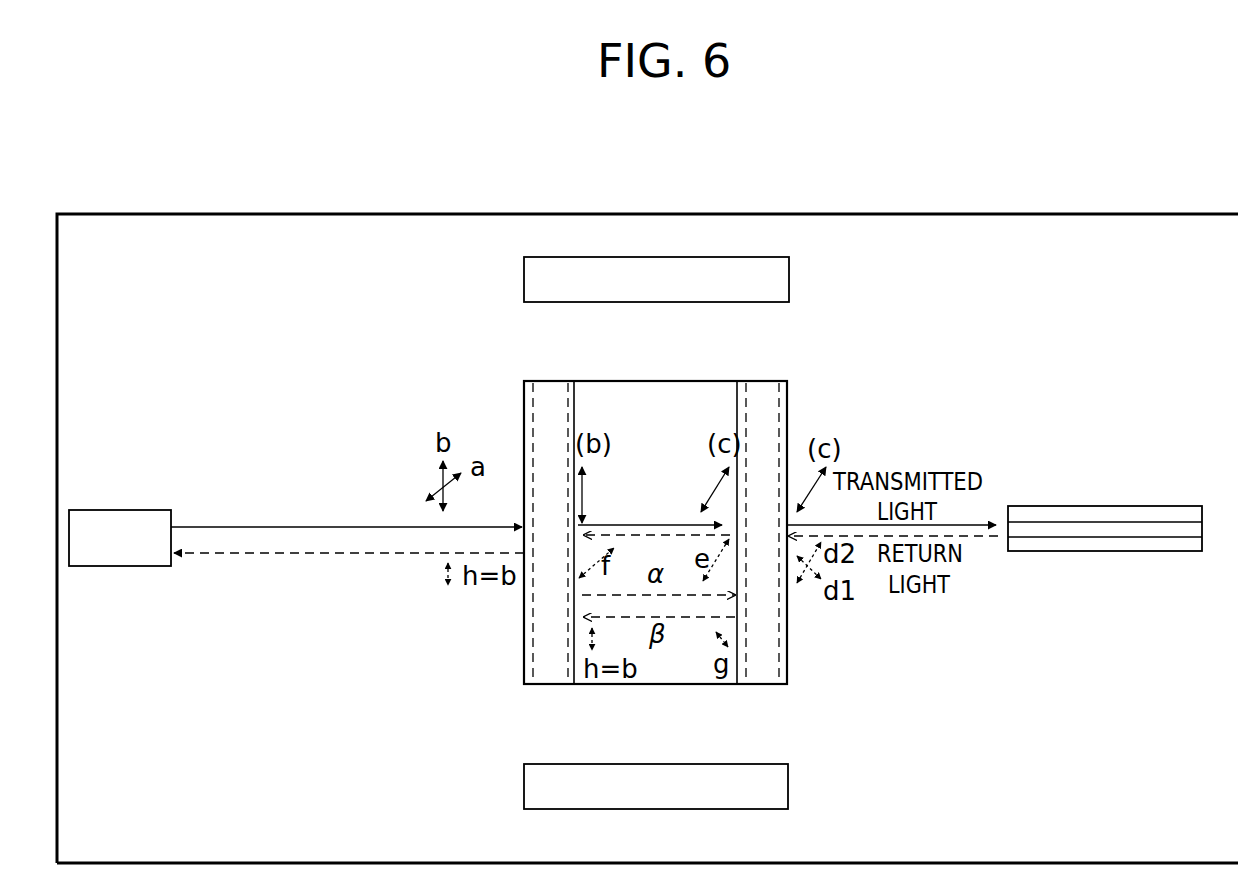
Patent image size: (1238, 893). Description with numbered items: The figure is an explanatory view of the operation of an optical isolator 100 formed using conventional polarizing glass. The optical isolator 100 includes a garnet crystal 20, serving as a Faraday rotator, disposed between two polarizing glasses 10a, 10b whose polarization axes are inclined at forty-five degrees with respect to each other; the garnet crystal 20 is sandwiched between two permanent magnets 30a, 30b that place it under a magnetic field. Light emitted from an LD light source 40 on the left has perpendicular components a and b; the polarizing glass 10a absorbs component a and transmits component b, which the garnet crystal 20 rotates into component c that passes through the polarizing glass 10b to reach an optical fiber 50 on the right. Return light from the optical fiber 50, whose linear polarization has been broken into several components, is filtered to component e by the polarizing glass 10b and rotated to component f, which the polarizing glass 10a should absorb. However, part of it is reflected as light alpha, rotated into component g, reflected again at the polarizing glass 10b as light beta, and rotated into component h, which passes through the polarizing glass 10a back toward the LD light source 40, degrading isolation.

The optical isolator 100 is at (808, 681).
The polarizing glass 10a is at (560, 381).
The polarizing glass 10b is at (764, 381).
The garnet crystal 20 is at (656, 381).
The permanent magnet 30a is at (524, 273).
The permanent magnet 30b is at (524, 790).
The LD light source 40 is at (134, 510).
The optical fiber 50 is at (1093, 506).